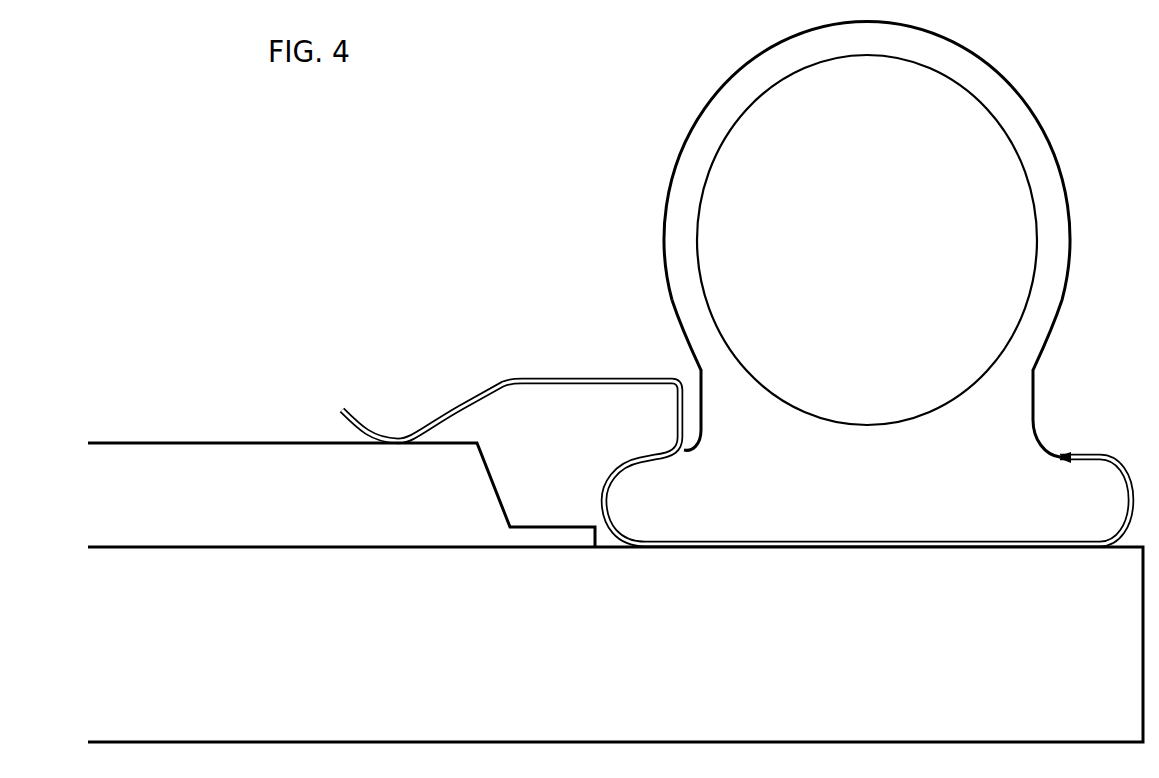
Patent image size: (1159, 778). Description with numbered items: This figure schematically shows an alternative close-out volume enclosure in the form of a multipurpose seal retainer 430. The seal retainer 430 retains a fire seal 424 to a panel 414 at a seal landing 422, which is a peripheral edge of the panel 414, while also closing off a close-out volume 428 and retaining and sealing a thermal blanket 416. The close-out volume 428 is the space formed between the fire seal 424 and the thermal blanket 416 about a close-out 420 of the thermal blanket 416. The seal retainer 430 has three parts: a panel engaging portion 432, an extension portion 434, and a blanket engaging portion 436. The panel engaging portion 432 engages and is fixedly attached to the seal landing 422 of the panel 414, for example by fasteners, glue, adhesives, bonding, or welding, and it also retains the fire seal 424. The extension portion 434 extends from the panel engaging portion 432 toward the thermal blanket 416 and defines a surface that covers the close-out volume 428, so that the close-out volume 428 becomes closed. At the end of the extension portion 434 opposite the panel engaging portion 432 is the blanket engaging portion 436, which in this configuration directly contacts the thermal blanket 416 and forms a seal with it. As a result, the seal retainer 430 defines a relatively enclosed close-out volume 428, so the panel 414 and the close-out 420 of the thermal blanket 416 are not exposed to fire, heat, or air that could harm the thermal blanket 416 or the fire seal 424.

The panel 414 is at (353, 715).
The thermal blanket 416 is at (233, 467).
The close-out 420 is at (560, 537).
The seal landing 422 is at (896, 628).
The fire seal 424 is at (1008, 380).
The close-out volume 428 is at (500, 440).
The seal retainer 430 is at (613, 325).
The panel engaging portion 432 is at (888, 545).
The extension portion 434 is at (540, 378).
The blanket engaging portion 436 is at (333, 392).